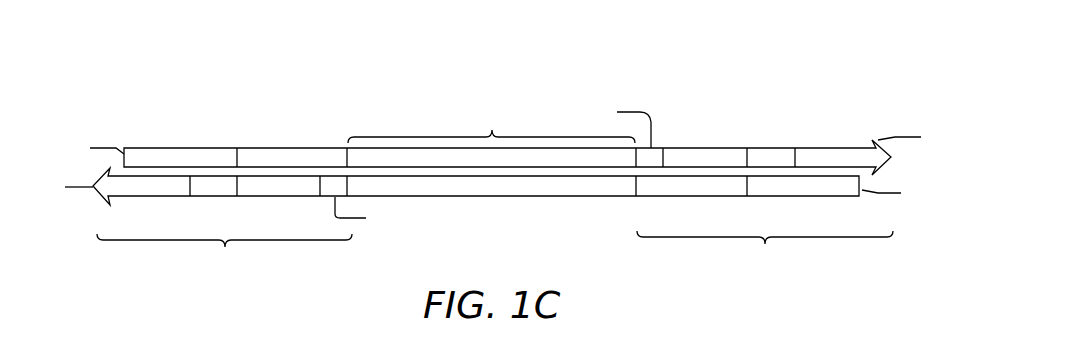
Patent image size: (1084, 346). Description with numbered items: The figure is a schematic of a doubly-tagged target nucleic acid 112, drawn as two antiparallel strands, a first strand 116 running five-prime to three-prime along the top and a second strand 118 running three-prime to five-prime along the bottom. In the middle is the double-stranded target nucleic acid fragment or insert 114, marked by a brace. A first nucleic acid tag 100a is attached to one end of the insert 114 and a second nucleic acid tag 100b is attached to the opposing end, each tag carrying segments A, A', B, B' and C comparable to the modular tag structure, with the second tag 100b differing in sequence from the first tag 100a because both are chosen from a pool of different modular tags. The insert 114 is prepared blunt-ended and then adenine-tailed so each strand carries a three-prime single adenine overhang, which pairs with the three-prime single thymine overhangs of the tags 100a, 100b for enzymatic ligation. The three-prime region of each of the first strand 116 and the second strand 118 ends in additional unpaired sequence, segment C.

The doubly-tagged target nucleic acid 112 is at (780, 68).
The double-stranded target nucleic acid fragment or insert 114 is at (491, 124).
The first strand 116 is at (147, 148).
The second strand 118 is at (843, 197).
The first nucleic acid tag 100a is at (224, 254).
The second nucleic acid tag 100b is at (765, 253).